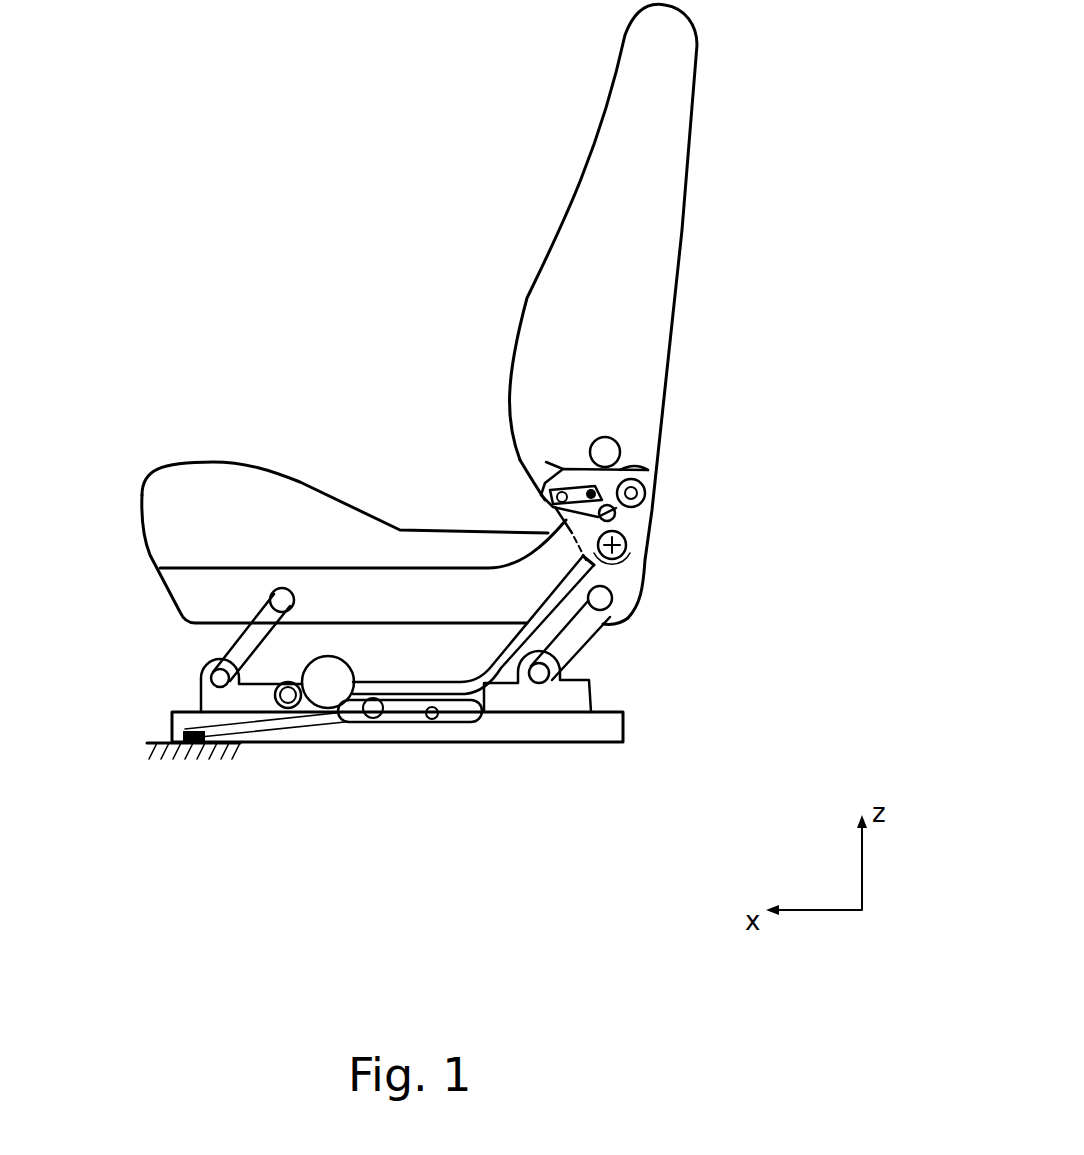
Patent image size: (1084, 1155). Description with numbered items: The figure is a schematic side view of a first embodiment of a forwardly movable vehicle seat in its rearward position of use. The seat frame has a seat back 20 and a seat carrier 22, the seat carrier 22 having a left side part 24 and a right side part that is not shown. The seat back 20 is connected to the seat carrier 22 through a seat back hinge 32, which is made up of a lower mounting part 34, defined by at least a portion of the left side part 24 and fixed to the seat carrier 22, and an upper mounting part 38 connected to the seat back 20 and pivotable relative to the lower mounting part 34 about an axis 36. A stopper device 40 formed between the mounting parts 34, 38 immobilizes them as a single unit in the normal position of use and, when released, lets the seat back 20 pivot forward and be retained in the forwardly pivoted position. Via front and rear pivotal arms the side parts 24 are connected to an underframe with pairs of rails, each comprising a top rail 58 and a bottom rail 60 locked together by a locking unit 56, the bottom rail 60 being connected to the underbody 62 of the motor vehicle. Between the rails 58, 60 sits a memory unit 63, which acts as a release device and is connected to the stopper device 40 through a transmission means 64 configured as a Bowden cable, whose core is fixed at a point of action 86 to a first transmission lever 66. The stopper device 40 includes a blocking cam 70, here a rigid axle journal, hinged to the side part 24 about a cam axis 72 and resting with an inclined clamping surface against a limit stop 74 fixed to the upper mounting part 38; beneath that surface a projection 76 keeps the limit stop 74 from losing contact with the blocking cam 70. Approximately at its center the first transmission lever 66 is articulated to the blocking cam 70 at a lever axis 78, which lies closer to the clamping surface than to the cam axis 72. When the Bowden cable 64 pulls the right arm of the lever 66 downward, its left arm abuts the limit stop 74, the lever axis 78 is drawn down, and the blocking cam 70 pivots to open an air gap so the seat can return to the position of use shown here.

The seat back 20 is at (657, 80).
The seat carrier 22 is at (108, 572).
The left side part 24 is at (339, 587).
The seat back hinge 32 is at (631, 420).
The lower mounting part 34 is at (614, 601).
The axis 36 is at (643, 580).
The upper mounting part 38 is at (645, 437).
The stopper device 40 is at (520, 460).
The locking unit 56 is at (307, 708).
The top rail 58 is at (561, 699).
The bottom rail 60 is at (505, 730).
The underbody 62 is at (160, 750).
The memory unit 63 is at (380, 719).
The transmission means 64 is at (543, 628).
The first transmission lever 66 is at (552, 500).
The blocking cam 70 is at (546, 462).
The cam axis 72 is at (650, 500).
The limit stop 74 is at (605, 452).
The projection 76 is at (545, 485).
The lever axis 78 is at (650, 470).
The point of action 86 is at (630, 538).